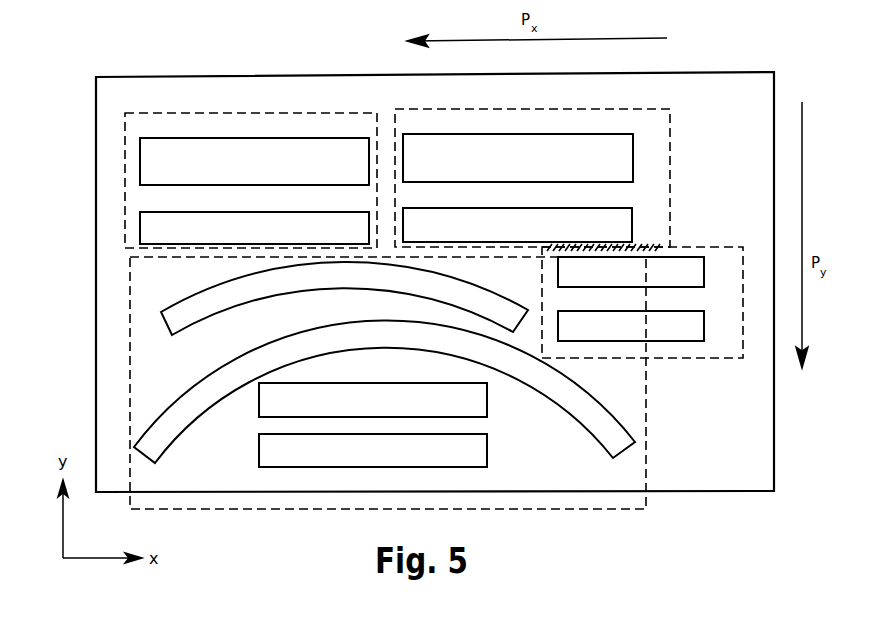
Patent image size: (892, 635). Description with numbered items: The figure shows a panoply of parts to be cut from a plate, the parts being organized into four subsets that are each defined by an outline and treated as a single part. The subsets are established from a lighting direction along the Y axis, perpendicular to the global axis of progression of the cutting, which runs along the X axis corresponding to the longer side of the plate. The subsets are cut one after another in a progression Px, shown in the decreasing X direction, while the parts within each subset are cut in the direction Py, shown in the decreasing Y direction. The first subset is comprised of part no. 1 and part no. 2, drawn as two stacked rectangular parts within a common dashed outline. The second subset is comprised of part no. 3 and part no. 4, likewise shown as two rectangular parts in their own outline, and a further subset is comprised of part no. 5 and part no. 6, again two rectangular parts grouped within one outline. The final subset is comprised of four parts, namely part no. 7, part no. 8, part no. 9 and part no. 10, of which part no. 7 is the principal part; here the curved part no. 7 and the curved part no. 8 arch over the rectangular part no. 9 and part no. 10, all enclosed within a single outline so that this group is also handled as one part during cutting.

The part no. 1 is at (631, 272).
The part no. 2 is at (631, 326).
The part no. 3 is at (518, 158).
The part no. 4 is at (517, 225).
The part no. 5 is at (254, 161).
The part no. 6 is at (254, 228).
The principal part no. 7 is at (344, 298).
The part no. 8 is at (384, 391).
The part no. 9 is at (373, 400).
The part no. 10 is at (373, 450).